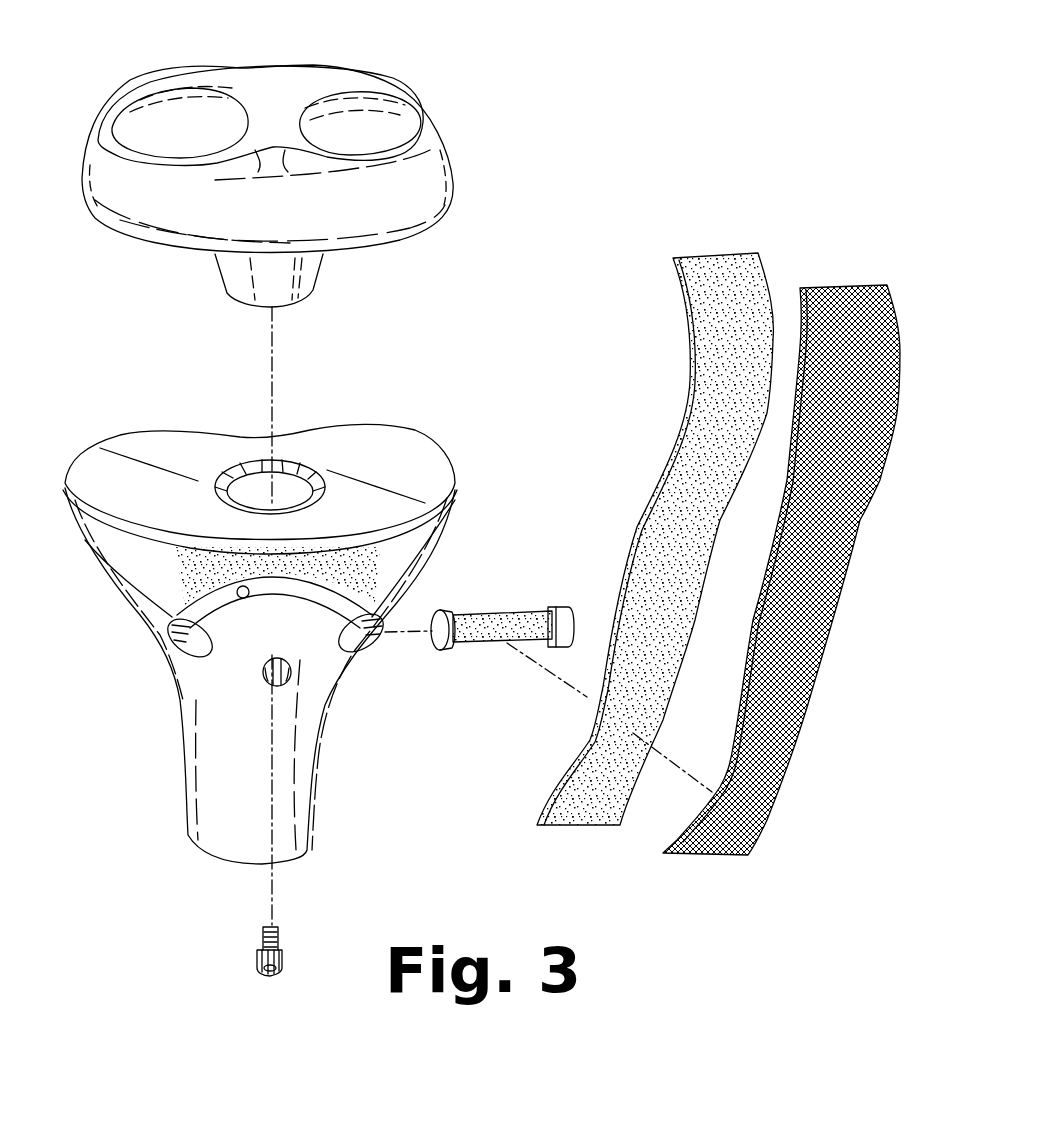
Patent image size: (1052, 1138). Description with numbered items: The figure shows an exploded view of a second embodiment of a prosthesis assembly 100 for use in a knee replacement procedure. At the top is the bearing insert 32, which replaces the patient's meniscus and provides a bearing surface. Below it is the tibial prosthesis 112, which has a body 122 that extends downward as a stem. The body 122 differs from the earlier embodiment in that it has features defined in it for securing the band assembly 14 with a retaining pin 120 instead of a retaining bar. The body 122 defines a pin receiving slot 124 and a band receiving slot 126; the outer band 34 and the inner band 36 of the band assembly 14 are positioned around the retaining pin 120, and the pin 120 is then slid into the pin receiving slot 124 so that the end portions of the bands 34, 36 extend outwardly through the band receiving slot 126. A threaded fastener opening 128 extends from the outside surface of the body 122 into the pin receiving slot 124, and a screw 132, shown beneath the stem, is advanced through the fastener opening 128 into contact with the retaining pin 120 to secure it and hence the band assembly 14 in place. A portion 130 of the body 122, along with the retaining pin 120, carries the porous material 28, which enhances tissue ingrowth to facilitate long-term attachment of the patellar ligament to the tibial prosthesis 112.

The prosthesis assembly 100 is at (603, 88).
The band assembly 14 is at (795, 247).
The bearing insert 32 is at (421, 156).
The outer band 34 is at (845, 578).
The inner band 36 is at (681, 437).
The tibial prosthesis 112 is at (362, 450).
The retaining pin 120 is at (496, 605).
The body 122 is at (198, 712).
The pin receiving slot 124 is at (172, 648).
The band receiving slot 126 is at (246, 598).
The threaded fastener opening 128 is at (263, 679).
The portion 130 is at (370, 558).
The screw 132 is at (256, 955).
The porous material 28 is at (175, 628).